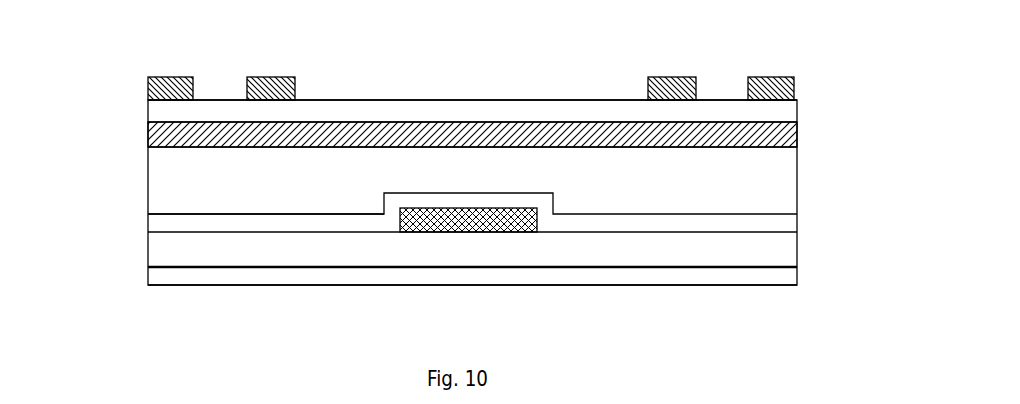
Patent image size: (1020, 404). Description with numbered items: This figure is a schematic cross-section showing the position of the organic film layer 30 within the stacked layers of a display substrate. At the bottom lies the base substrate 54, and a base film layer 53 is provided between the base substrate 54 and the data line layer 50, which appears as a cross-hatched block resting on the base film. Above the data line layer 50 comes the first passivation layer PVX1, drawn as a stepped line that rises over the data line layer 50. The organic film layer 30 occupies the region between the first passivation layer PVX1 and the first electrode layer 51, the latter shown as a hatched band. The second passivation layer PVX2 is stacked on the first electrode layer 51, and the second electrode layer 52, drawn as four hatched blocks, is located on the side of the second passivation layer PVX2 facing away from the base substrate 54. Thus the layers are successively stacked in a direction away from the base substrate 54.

The second passivation layer PVX2 is at (150, 114).
The second electrode layer 52 is at (774, 78).
The first electrode layer 51 is at (798, 135).
The organic film layer 30 is at (150, 177).
The first passivation layer PVX1 is at (797, 220).
The data line layer 50 is at (440, 233).
The base film layer 53 is at (150, 258).
The base substrate 54 is at (797, 279).